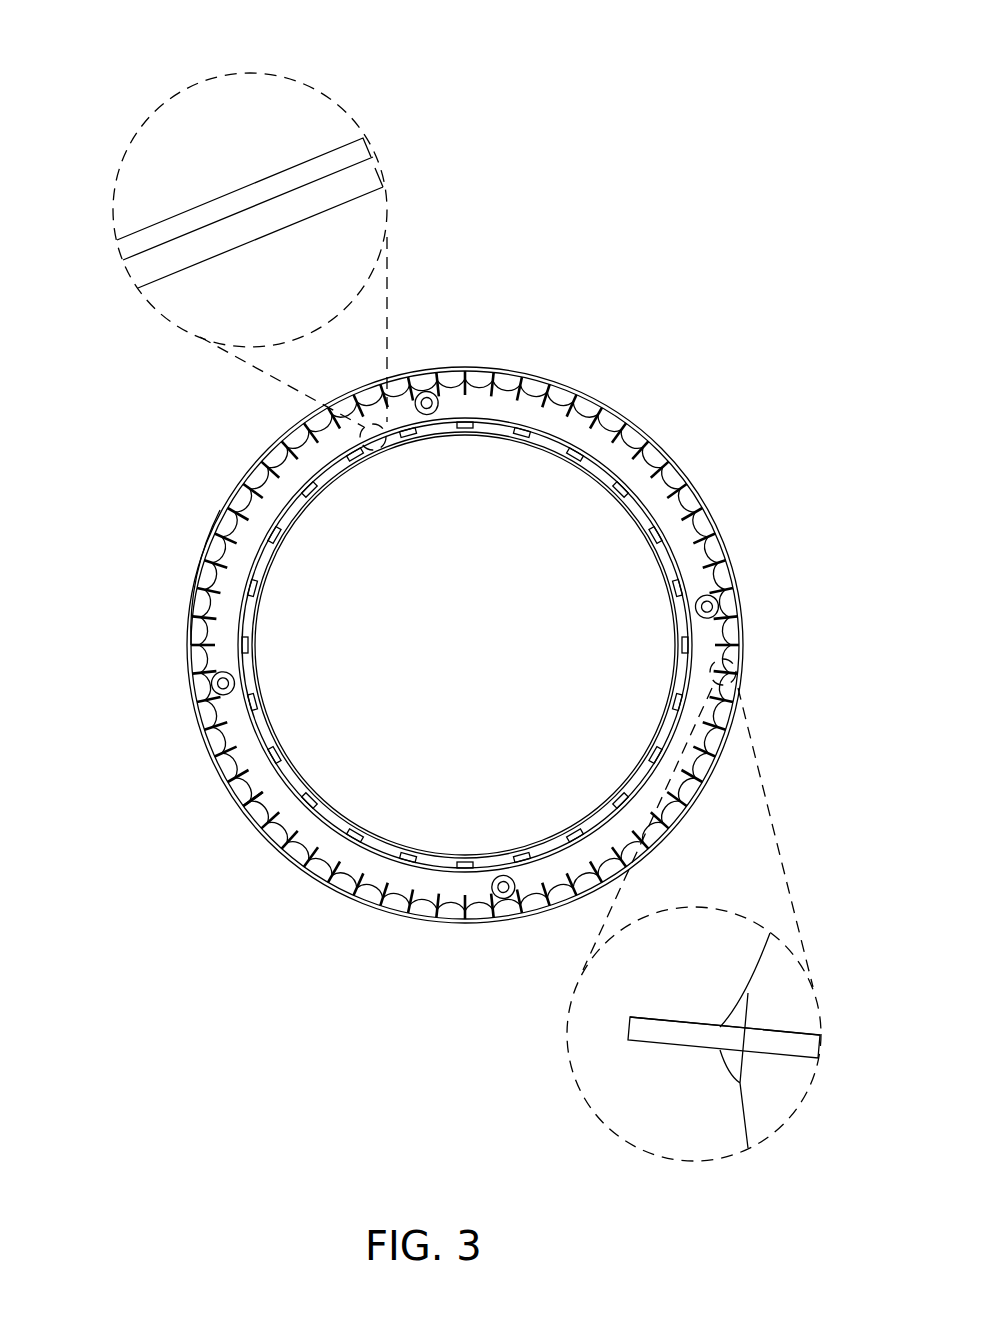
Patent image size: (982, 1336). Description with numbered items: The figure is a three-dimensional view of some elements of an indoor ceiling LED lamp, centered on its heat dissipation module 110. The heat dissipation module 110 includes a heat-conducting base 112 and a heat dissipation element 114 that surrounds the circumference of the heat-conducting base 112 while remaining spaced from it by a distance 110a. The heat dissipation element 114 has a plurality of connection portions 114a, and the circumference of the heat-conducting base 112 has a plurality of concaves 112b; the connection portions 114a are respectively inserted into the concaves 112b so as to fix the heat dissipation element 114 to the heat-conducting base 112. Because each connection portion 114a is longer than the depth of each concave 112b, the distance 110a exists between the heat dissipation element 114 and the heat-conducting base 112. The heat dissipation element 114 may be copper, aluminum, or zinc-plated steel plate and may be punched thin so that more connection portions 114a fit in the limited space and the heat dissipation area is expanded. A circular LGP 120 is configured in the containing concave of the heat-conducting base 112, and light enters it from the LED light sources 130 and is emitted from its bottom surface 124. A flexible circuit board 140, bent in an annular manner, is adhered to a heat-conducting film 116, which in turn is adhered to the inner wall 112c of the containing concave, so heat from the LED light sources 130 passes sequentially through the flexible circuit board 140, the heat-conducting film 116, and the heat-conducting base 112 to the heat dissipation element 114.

The heat dissipation module 110 is at (166, 858).
The distance 110a is at (209, 739).
The heat-conducting base 112 is at (280, 837).
The concaves 112b is at (687, 1026).
The inner wall 112c is at (168, 224).
The heat dissipation element 114 is at (250, 818).
The connection portions 114a is at (237, 795).
The heat-conducting film 116 is at (372, 148).
The circular LGP 120 is at (480, 467).
The bottom surface 124 is at (533, 496).
The LED light sources 130 is at (525, 430).
The flexible circuit board 140 is at (370, 177).